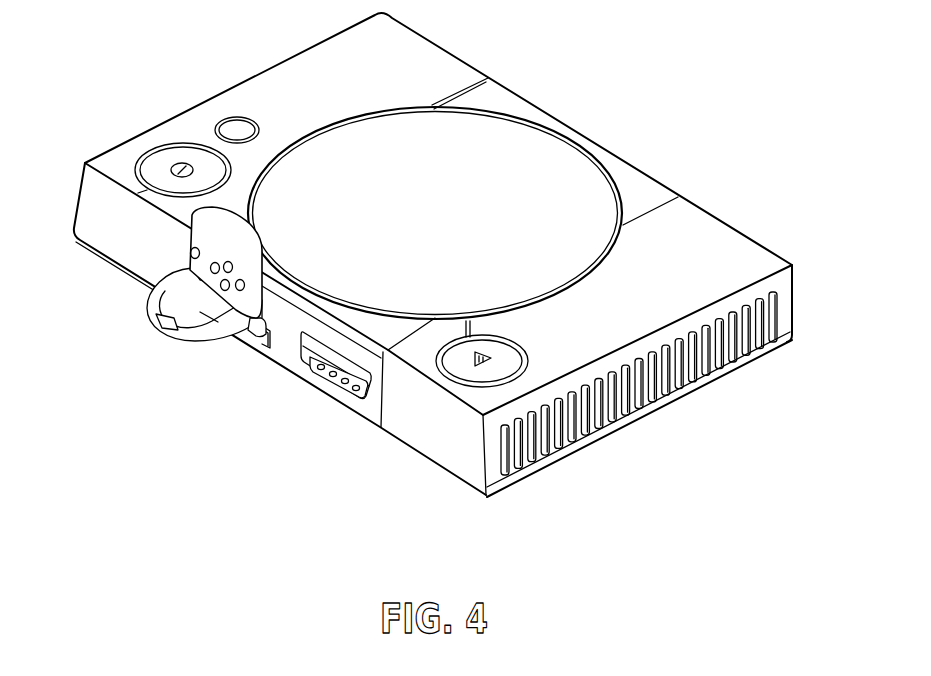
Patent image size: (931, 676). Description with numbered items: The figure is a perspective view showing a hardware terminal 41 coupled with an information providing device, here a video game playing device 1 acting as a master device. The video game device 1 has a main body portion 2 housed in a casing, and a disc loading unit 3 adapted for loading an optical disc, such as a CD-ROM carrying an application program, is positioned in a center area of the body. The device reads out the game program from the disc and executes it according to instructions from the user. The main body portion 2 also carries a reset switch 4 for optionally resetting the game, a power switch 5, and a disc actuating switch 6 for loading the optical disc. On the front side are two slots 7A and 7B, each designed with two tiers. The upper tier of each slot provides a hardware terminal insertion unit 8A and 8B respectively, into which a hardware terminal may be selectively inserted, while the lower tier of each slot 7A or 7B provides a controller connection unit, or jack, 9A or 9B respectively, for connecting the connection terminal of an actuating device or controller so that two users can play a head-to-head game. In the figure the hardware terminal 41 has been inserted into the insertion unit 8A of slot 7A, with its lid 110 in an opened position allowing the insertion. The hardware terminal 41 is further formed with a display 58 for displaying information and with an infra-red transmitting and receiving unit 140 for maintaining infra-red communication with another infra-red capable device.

The video game playing device 1 is at (623, 131).
The main body portion 2 is at (733, 243).
The disc loading unit 3 is at (517, 137).
The reset switch 4 is at (230, 126).
The power switch 5 is at (152, 164).
The disc actuating switch 6 is at (508, 369).
The slot 7A is at (257, 354).
The slot 7B is at (329, 402).
The hardware terminal insertion unit 8A is at (273, 343).
The hardware terminal insertion unit 8B is at (386, 357).
The controller connection unit 9A is at (257, 324).
The controller connection unit 9B is at (353, 400).
The hardware terminal 41 is at (139, 306).
The display 58 is at (208, 319).
The lid 110 is at (188, 243).
The infra-red transmitting and receiving unit 140 is at (163, 343).